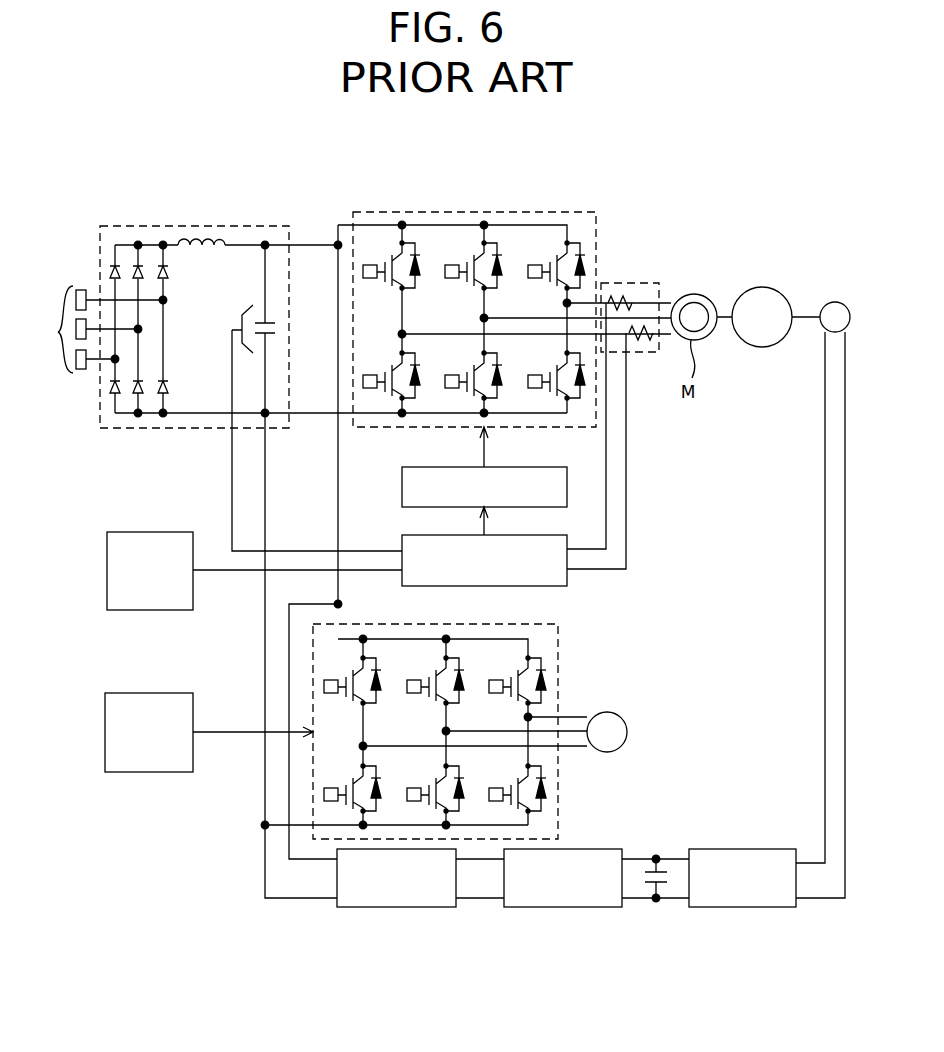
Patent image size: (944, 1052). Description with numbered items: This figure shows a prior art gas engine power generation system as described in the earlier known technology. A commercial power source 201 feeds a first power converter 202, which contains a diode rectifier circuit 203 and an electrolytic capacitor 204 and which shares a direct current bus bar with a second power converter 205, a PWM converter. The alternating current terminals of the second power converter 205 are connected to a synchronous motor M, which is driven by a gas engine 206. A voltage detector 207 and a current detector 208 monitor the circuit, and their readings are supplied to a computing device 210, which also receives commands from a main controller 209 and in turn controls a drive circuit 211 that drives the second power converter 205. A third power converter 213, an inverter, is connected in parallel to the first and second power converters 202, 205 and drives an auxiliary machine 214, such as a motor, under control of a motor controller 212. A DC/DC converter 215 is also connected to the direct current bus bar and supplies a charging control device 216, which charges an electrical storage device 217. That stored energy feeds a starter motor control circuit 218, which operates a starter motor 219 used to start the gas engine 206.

The commercial power source 201 is at (65, 378).
The first power converter 202 is at (190, 225).
The diode rectifier circuit 203 is at (170, 327).
The electrolytic capacitor 204 is at (280, 326).
The second power converter 205 is at (470, 210).
The gas engine 206 is at (762, 348).
The voltage detector 207 is at (230, 323).
The current detector 208 is at (640, 283).
The main controller 209 is at (150, 532).
The computing device 210 is at (537, 578).
The drive circuit 211 is at (538, 471).
The motor controller 212 is at (146, 690).
The third power converter 213 is at (558, 641).
The auxiliary machine 214 is at (618, 719).
The DC/DC converter 215 is at (400, 908).
The charging control device 216 is at (555, 908).
The electrical storage device 217 is at (645, 884).
The starter motor control circuit 218 is at (744, 908).
The starter motor 219 is at (835, 302).